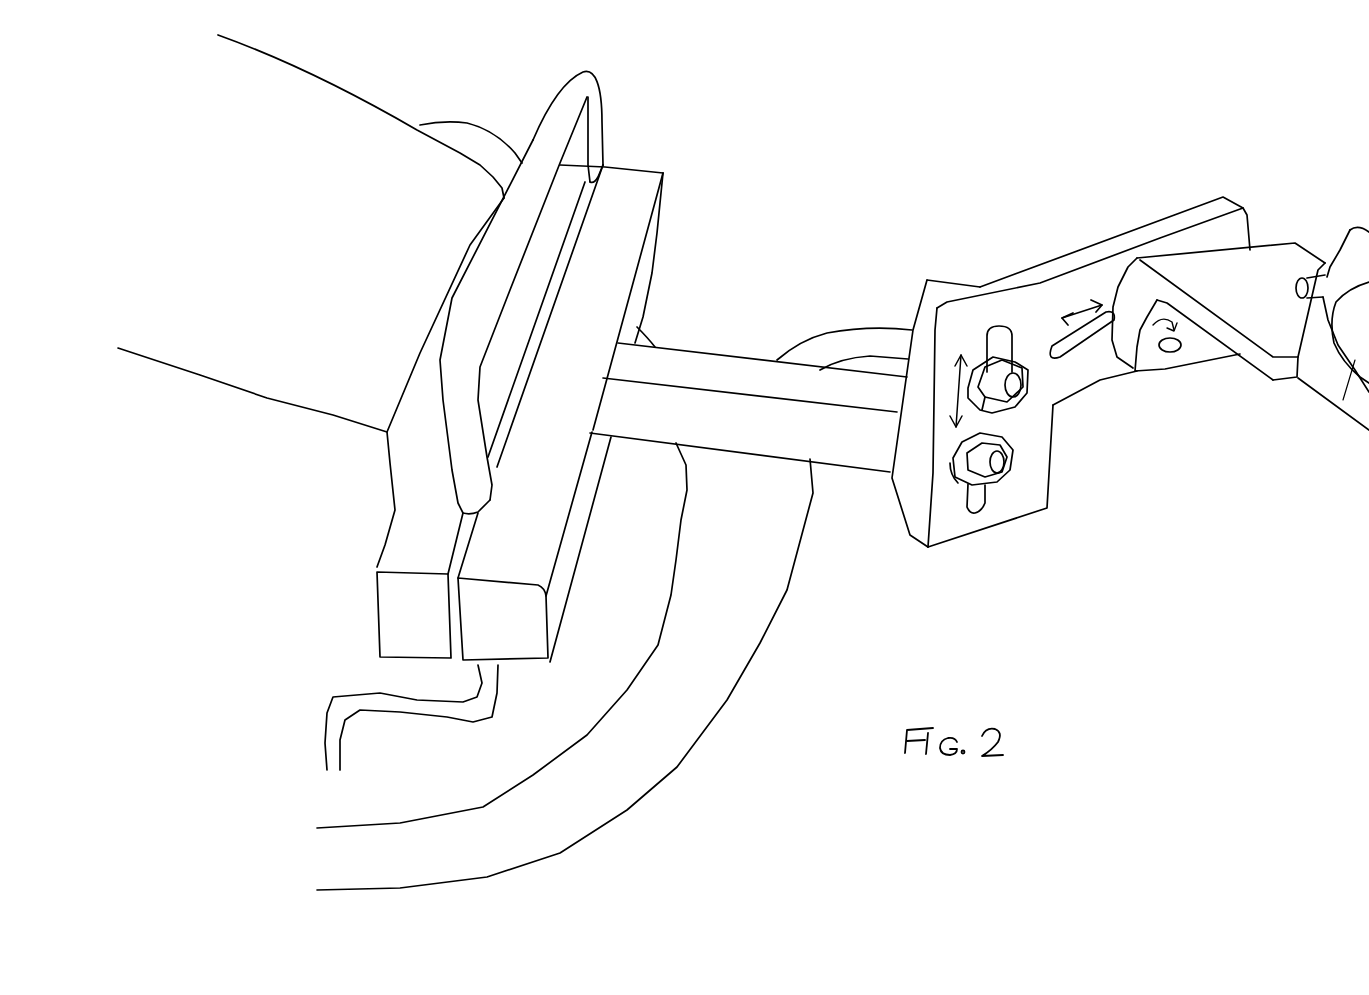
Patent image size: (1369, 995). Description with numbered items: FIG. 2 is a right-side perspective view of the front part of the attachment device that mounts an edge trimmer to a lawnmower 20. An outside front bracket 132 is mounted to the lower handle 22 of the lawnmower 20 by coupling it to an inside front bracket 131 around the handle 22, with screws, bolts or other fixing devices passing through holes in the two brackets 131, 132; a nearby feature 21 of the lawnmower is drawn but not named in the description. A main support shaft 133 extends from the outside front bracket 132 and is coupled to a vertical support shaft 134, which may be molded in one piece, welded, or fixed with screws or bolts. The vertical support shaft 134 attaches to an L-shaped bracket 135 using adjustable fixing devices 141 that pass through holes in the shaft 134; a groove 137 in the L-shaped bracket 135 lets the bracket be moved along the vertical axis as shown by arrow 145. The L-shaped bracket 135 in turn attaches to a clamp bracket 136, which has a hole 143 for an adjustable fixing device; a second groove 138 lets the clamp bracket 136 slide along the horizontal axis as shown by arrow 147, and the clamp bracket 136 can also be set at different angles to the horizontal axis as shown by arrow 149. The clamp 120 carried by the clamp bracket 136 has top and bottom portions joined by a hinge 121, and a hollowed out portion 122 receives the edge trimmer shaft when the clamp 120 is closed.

The lawnmower 20 is at (590, 740).
The seat cushion 21 is at (836, 345).
The lower handle 22 is at (552, 135).
The clamp 120 is at (1348, 245).
The hinge 121 is at (1320, 265).
The hollowed out portion 122 is at (1343, 400).
The inside front bracket 131 is at (383, 607).
The outside front bracket 132 is at (520, 650).
The main support shaft 133 is at (708, 362).
The vertical support shaft 134 is at (942, 287).
The L-shaped bracket 135 is at (1065, 268).
The clamp bracket 136 is at (1263, 333).
The groove 137 is at (1005, 323).
The groove 138 is at (1091, 345).
The adjustable fixing device 141 is at (1013, 410).
The hole 143 is at (1164, 353).
The arrow 145 is at (958, 397).
The arrow 147 is at (1082, 300).
The arrow 149 is at (1162, 322).